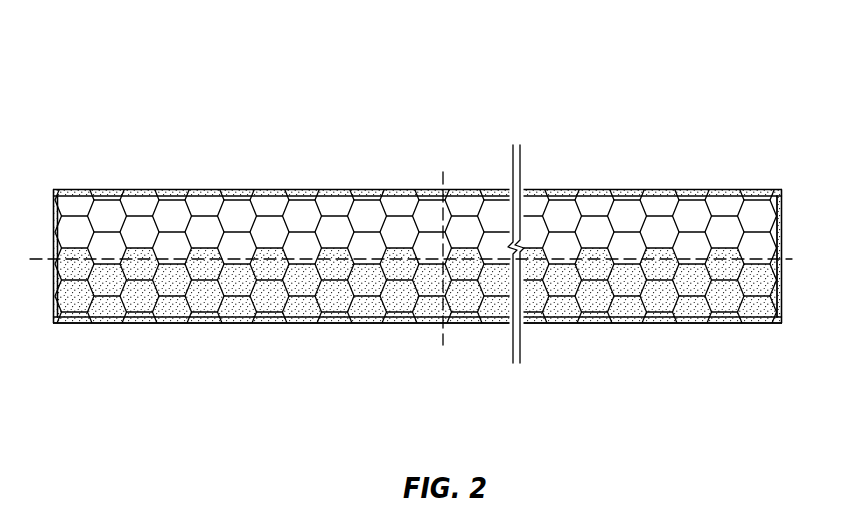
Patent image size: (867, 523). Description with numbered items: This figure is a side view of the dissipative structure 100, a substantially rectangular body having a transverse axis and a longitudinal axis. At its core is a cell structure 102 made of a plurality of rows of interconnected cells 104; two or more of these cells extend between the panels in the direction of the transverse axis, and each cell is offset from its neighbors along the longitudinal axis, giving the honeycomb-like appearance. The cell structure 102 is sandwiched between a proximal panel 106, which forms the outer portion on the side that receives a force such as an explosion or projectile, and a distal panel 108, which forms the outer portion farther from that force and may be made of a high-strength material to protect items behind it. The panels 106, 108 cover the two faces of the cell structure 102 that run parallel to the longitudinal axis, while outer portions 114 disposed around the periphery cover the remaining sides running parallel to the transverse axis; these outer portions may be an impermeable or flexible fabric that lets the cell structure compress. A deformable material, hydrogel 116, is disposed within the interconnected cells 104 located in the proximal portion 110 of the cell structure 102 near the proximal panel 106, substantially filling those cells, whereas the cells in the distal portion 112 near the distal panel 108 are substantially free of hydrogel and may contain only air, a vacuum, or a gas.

The dissipative structure 100 is at (176, 91).
The cell structure 102 is at (668, 200).
The interconnected cells 104 is at (383, 247).
The proximal panel 106 is at (552, 323).
The distal panel 108 is at (568, 194).
The proximal portion 110 is at (247, 309).
The distal portion 112 is at (403, 210).
The outer portions 114 is at (53, 290).
The hydrogel 116 is at (695, 322).